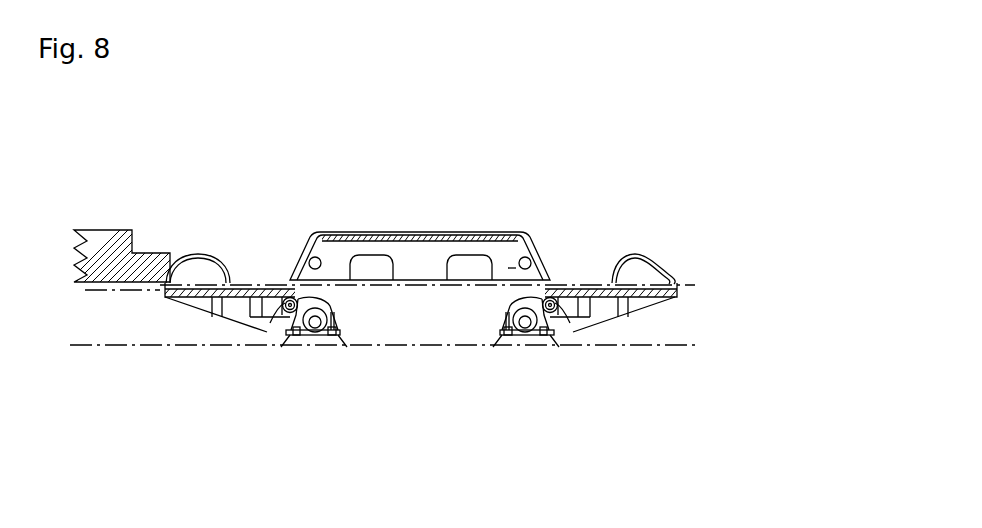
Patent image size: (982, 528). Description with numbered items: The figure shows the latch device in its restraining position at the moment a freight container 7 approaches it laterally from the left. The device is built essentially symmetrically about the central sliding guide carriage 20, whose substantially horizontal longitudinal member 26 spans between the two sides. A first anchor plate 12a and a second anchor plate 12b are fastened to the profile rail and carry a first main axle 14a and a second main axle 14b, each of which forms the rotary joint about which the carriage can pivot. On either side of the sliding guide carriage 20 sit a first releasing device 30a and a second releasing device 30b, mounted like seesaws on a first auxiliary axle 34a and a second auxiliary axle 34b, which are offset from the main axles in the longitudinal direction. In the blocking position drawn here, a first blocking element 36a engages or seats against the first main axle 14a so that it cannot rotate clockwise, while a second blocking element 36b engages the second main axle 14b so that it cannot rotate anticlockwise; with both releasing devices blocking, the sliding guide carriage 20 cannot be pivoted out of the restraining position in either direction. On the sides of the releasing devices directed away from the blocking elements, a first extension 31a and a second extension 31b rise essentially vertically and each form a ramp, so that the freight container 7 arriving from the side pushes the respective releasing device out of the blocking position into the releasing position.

The freight container 7 is at (110, 232).
The sliding guide carriage 20 is at (556, 256).
The longitudinal member 26 is at (512, 258).
The first releasing device 30a is at (200, 305).
The second releasing device 30b is at (617, 310).
The first extension 31a is at (192, 270).
The second extension 31b is at (668, 285).
The first auxiliary axle 34a is at (290, 308).
The second auxiliary axle 34b is at (557, 305).
The first anchor plate 12a is at (313, 332).
The second anchor plate 12b is at (528, 330).
The first main axle 14a is at (318, 328).
The second main axle 14b is at (543, 323).
The first blocking element 36a is at (340, 334).
The second blocking element 36b is at (503, 340).